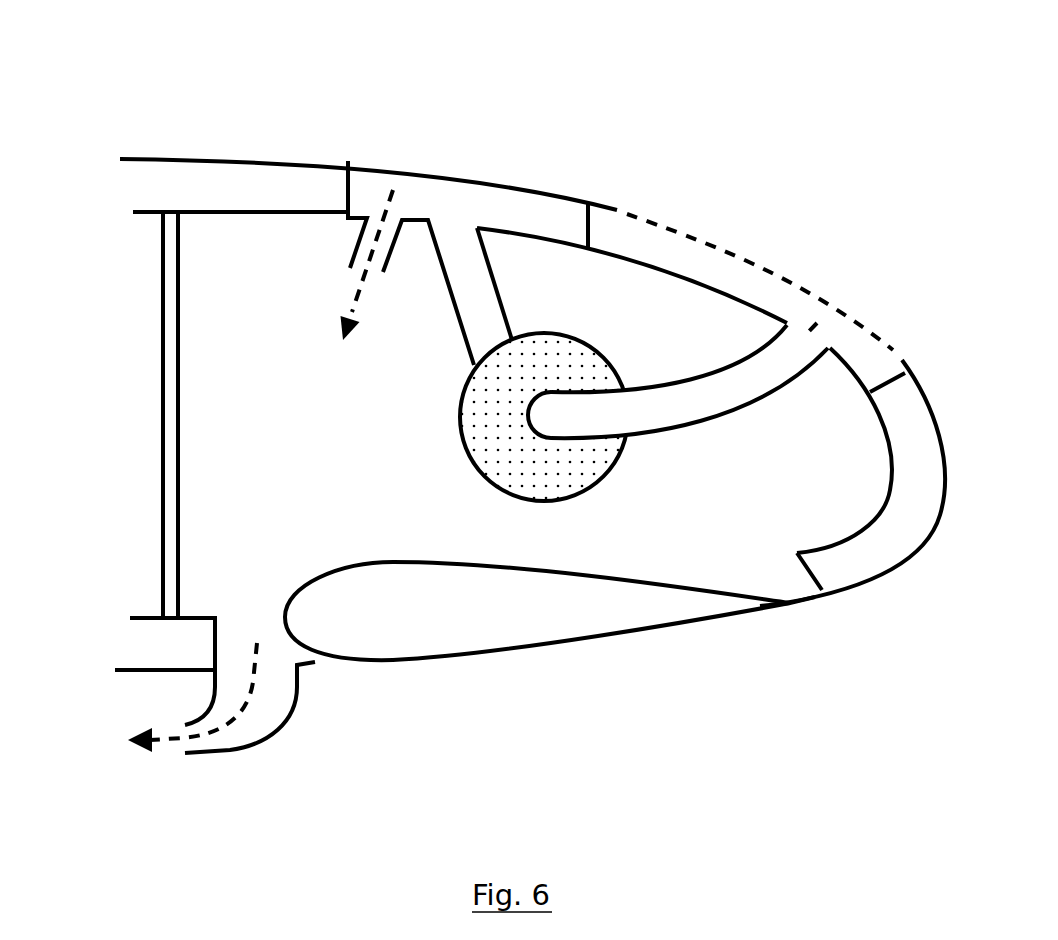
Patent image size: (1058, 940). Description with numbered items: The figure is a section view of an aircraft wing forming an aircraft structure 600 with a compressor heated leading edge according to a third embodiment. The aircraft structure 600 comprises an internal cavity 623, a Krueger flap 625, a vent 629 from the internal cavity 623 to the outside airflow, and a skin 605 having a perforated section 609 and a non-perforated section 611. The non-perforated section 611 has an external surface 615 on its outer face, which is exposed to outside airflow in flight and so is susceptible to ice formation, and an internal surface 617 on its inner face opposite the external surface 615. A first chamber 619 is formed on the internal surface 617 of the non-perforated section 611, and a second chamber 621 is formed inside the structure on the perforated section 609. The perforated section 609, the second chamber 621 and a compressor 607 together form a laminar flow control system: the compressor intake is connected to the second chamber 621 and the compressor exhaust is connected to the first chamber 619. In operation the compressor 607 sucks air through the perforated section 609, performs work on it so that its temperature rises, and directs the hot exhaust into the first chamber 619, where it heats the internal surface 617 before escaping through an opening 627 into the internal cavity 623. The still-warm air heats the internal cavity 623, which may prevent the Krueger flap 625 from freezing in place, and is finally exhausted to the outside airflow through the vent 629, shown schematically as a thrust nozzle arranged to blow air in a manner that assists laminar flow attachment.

The aircraft structure 600 is at (130, 123).
The skin 605 is at (800, 605).
The compressor 607 is at (570, 467).
The perforated section 609 is at (800, 278).
The non-perforated section 611 is at (462, 172).
The external surface 615 is at (375, 164).
The internal surface 617 is at (372, 175).
The first chamber 619 is at (550, 213).
The second chamber 621 is at (708, 257).
The internal cavity 623 is at (215, 477).
The Krueger flap 625 is at (600, 612).
The opening 627 is at (375, 275).
The vent 629 is at (257, 717).